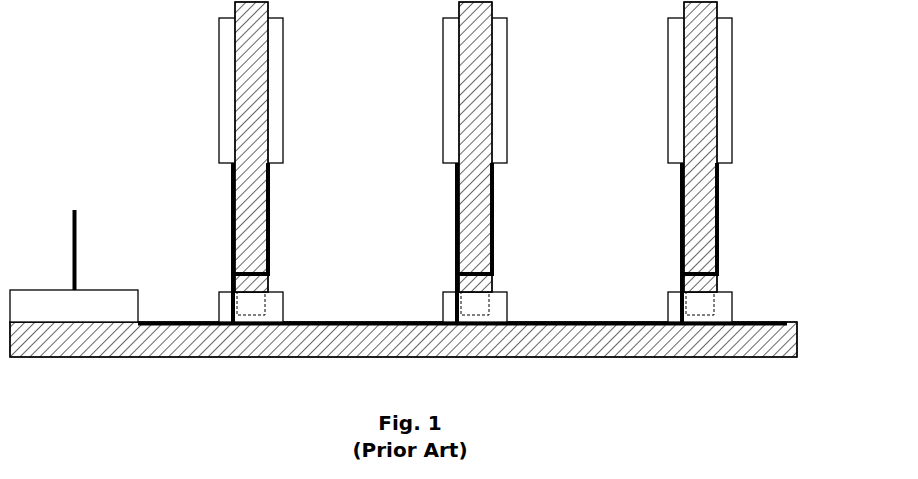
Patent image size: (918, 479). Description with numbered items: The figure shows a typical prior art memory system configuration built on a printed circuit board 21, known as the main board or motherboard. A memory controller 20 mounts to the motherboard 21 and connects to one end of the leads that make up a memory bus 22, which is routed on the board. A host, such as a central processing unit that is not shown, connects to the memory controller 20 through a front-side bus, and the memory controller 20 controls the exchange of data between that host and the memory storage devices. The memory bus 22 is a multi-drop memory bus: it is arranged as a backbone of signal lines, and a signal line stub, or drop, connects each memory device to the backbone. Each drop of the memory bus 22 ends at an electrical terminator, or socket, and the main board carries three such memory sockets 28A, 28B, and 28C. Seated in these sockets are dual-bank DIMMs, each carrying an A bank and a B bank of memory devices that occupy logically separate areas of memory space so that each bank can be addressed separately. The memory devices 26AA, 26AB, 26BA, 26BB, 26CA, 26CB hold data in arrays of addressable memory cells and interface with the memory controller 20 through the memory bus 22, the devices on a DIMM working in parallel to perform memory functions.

The memory controller 20 is at (58, 305).
The printed circuit board 21 is at (378, 357).
The memory bus 22 is at (565, 338).
The memory device 26AA is at (219, 90).
The memory device 26AB is at (283, 51).
The memory device 26BA is at (443, 90).
The memory device 26BB is at (507, 51).
The memory device 26CA is at (668, 90).
The memory device 26CB is at (732, 51).
The memory socket 28A is at (283, 307).
The memory socket 28B is at (507, 307).
The memory socket 28C is at (732, 307).